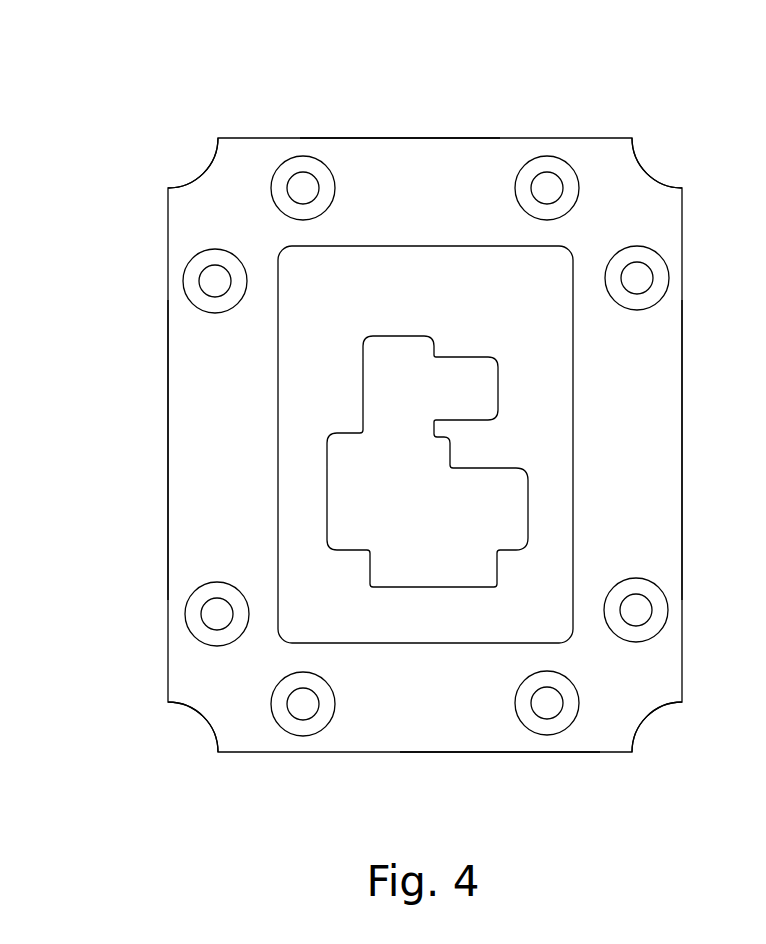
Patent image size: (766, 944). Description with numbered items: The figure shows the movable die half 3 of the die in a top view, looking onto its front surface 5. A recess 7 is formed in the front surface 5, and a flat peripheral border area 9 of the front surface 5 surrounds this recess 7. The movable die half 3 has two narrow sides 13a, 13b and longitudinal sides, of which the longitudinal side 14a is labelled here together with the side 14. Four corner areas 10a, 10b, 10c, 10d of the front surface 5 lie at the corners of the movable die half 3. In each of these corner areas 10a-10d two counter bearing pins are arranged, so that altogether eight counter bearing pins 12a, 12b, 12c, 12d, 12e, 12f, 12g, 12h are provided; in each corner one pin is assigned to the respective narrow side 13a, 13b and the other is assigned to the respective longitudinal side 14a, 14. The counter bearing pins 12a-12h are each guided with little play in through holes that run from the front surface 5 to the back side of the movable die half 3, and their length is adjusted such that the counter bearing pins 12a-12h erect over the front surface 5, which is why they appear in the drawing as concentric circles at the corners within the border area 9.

The movable die half 3 is at (440, 145).
The front surface 5 is at (383, 178).
The recess 7 is at (379, 302).
The flat peripheral border area 9 is at (628, 388).
The corner area 10a is at (237, 203).
The corner area 10b is at (612, 175).
The corner area 10c is at (223, 707).
The corner area 10d is at (623, 693).
The counter bearing pin 12a is at (215, 615).
The counter bearing pin 12b is at (213, 281).
The counter bearing pin 12c is at (303, 188).
The counter bearing pin 12d is at (547, 188).
The counter bearing pin 12e is at (640, 277).
The counter bearing pin 12f is at (640, 610).
The counter bearing pin 12g is at (547, 703).
The counter bearing pin 12h is at (303, 704).
The narrow side 13a is at (403, 127).
The narrow side 13b is at (500, 757).
The right side edge 14 is at (702, 440).
The longitudinal side 14a is at (153, 384).